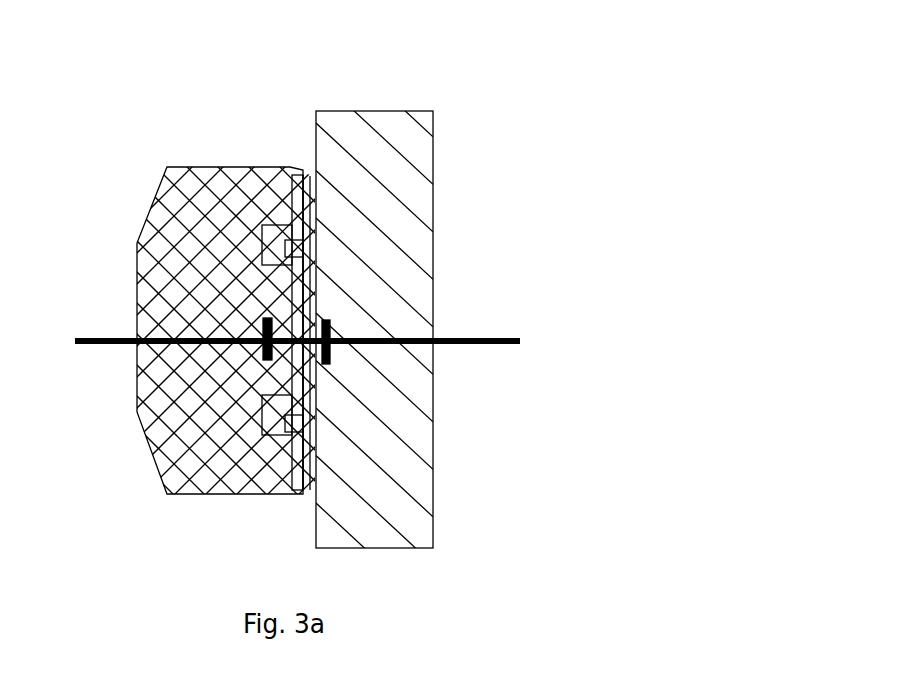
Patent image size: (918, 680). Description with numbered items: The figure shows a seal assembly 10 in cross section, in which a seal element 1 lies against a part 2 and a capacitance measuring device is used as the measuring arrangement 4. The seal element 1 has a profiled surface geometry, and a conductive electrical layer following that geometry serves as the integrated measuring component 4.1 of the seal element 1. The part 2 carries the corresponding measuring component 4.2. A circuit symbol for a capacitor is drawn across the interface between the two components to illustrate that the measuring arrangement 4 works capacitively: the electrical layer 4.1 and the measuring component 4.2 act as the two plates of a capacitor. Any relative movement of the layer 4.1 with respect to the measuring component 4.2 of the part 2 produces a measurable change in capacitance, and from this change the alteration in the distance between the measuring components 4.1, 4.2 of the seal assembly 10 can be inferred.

The seal element 1 is at (200, 165).
The part 2 is at (425, 207).
The measuring arrangement 4 is at (300, 133).
The measuring component 4.1 is at (300, 485).
The measuring component 4.2 is at (317, 523).
The seal assembly 10 is at (480, 95).